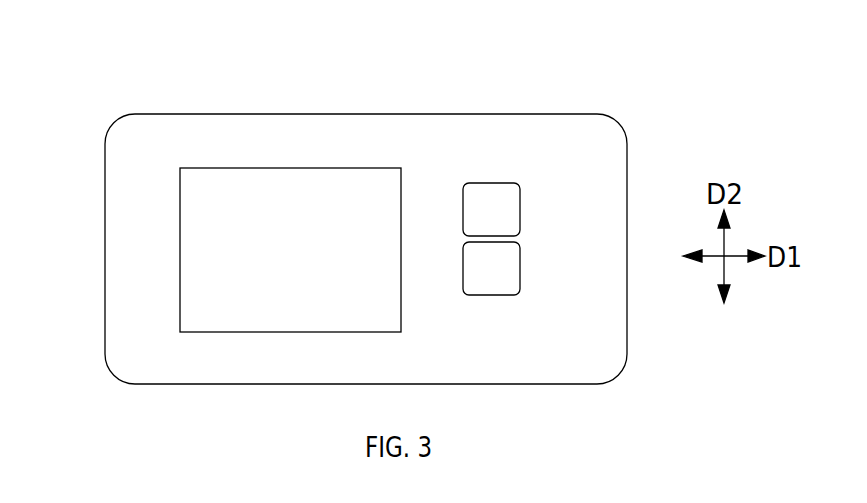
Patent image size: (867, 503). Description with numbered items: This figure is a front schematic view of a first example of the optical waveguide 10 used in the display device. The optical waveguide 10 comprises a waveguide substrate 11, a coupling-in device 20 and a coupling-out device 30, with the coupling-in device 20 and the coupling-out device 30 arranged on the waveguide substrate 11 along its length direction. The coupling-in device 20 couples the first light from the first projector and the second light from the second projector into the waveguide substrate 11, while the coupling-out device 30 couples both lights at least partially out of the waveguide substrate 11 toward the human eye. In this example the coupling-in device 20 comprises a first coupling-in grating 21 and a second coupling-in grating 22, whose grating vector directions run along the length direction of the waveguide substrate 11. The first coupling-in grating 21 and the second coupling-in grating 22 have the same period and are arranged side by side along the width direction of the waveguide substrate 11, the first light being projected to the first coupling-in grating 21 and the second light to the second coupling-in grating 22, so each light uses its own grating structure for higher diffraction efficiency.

The optical waveguide 10 is at (369, 195).
The waveguide substrate 11 is at (610, 155).
The coupling-in device 20 is at (505, 150).
The first coupling-in grating 21 is at (482, 213).
The second coupling-in grating 22 is at (491, 265).
The coupling-out device 30 is at (200, 225).